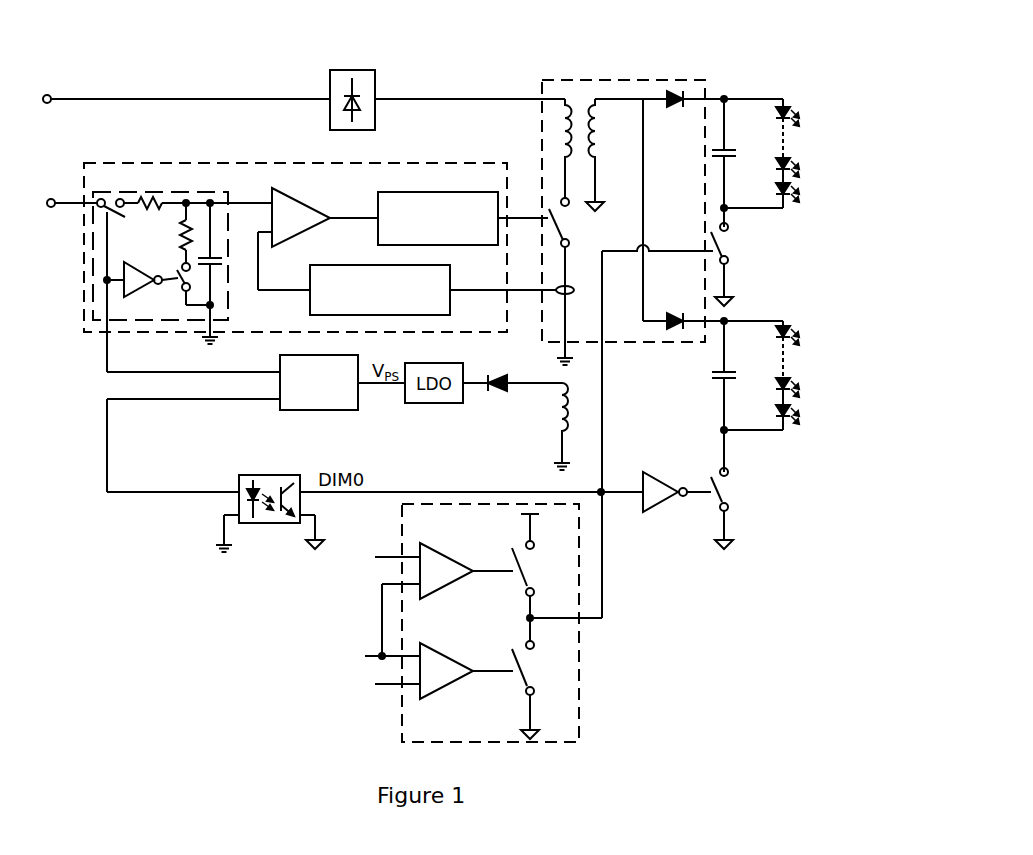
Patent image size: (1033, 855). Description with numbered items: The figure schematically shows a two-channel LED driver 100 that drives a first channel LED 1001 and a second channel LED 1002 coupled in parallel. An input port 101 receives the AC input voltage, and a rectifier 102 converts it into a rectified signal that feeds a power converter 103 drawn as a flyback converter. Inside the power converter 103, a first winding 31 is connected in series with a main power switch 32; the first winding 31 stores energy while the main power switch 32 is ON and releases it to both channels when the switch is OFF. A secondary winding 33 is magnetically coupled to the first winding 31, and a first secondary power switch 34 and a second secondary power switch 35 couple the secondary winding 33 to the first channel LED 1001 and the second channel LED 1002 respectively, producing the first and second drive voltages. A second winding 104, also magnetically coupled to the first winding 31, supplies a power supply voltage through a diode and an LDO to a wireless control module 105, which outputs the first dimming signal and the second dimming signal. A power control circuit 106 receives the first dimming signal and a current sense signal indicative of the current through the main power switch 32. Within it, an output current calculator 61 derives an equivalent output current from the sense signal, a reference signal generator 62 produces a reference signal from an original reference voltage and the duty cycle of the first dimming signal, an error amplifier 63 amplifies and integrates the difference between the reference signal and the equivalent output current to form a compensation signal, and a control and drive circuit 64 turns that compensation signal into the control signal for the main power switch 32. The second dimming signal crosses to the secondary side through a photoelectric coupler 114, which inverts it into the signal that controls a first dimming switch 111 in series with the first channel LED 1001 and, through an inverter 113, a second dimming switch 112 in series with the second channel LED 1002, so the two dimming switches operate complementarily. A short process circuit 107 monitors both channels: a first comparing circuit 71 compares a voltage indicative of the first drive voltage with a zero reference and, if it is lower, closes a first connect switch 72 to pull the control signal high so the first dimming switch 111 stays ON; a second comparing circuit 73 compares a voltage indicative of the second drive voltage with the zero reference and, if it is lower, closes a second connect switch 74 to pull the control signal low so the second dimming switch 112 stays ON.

The two-channel LED driver 100 is at (763, 46).
The input port 101 is at (76, 85).
The rectifier 102 is at (330, 116).
The power converter 103 is at (540, 94).
The second winding 104 is at (556, 406).
The wireless control module (RF/MCU) 105 is at (332, 412).
The power control circuit 106 is at (154, 164).
The short process circuit 107 is at (472, 623).
The first dimming switch 111 is at (735, 239).
The second dimming switch 112 is at (735, 484).
The inverter 113 is at (665, 508).
The photoelectric coupler 114 is at (265, 470).
The first winding 31 is at (558, 130).
The main power switch 32 is at (575, 281).
The secondary winding 33 is at (598, 135).
The first secondary power switch 34 is at (670, 104).
The second secondary power switch 35 is at (678, 314).
The output current calculator 61 is at (450, 304).
The reference signal generator 62 is at (229, 306).
The error amplifier 63 is at (303, 196).
The control and drive circuit 64 is at (450, 192).
The first comparing circuit 71 is at (444, 571).
The first connect switch 72 is at (557, 591).
The second comparing circuit 73 is at (439, 641).
The second connect switch 74 is at (537, 690).
The first channel LED 1001 is at (780, 150).
The second channel LED 1002 is at (780, 372).